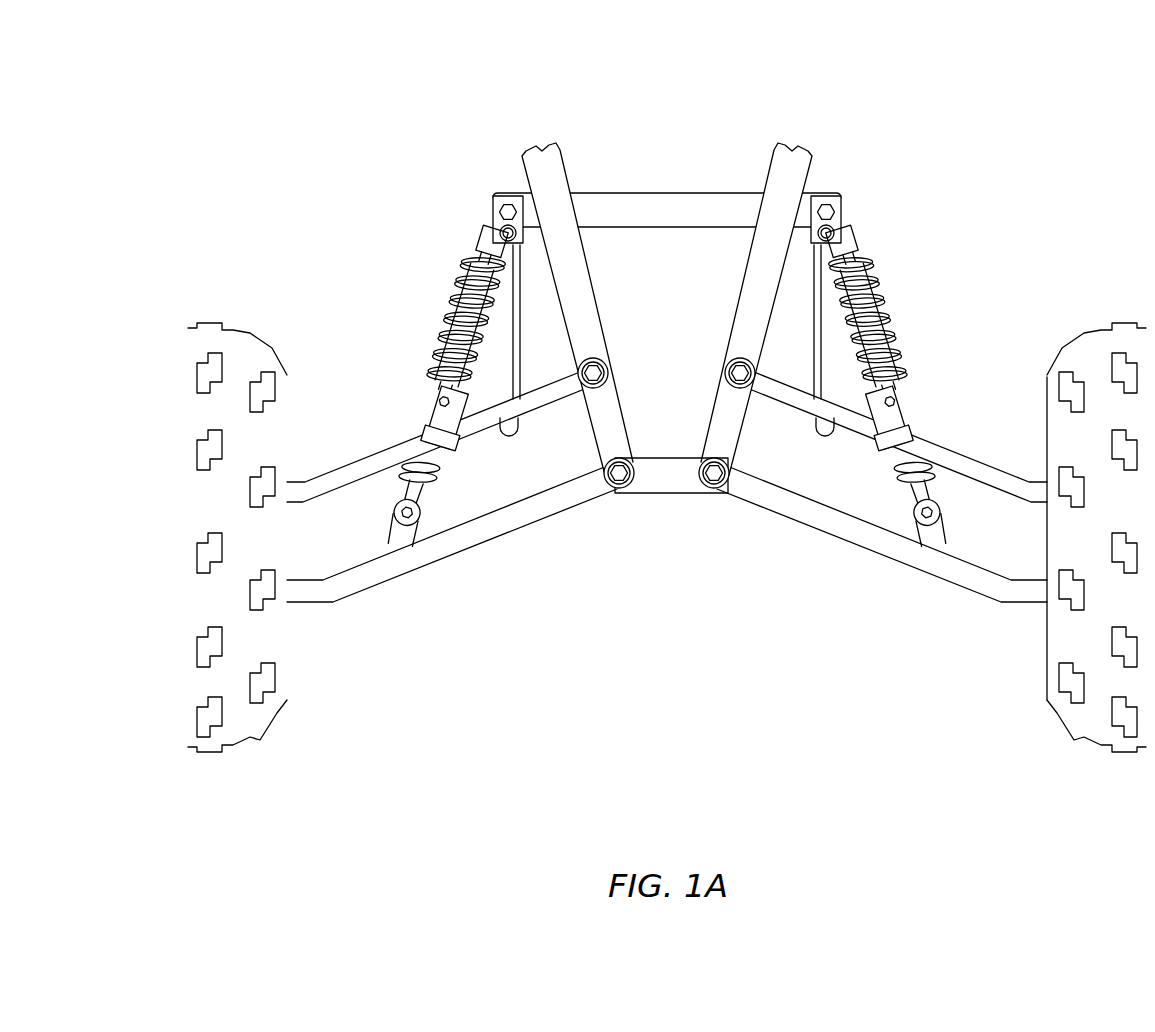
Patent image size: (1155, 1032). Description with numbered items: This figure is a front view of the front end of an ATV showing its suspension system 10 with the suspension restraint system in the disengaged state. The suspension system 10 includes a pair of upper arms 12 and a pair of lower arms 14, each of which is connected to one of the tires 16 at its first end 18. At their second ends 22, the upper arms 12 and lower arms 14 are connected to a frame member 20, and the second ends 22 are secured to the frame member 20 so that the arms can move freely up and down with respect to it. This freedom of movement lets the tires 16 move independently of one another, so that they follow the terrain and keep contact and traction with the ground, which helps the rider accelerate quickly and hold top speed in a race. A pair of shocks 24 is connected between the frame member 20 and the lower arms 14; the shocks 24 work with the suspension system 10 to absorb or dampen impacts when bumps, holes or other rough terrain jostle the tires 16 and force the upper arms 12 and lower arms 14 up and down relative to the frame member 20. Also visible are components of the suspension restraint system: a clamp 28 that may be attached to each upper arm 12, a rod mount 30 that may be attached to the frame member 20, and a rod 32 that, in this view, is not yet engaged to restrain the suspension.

The suspension system 10 is at (968, 102).
The upper arms 12 is at (338, 477).
The lower arms 14 is at (545, 508).
The tires 16 is at (238, 350).
The first ends 18 is at (300, 593).
The frame member 20 is at (547, 183).
The second ends 22 is at (593, 390).
The shocks 24 is at (452, 320).
The clamp 28 is at (447, 423).
The rod mount 30 is at (495, 200).
The rod 32 is at (520, 300).